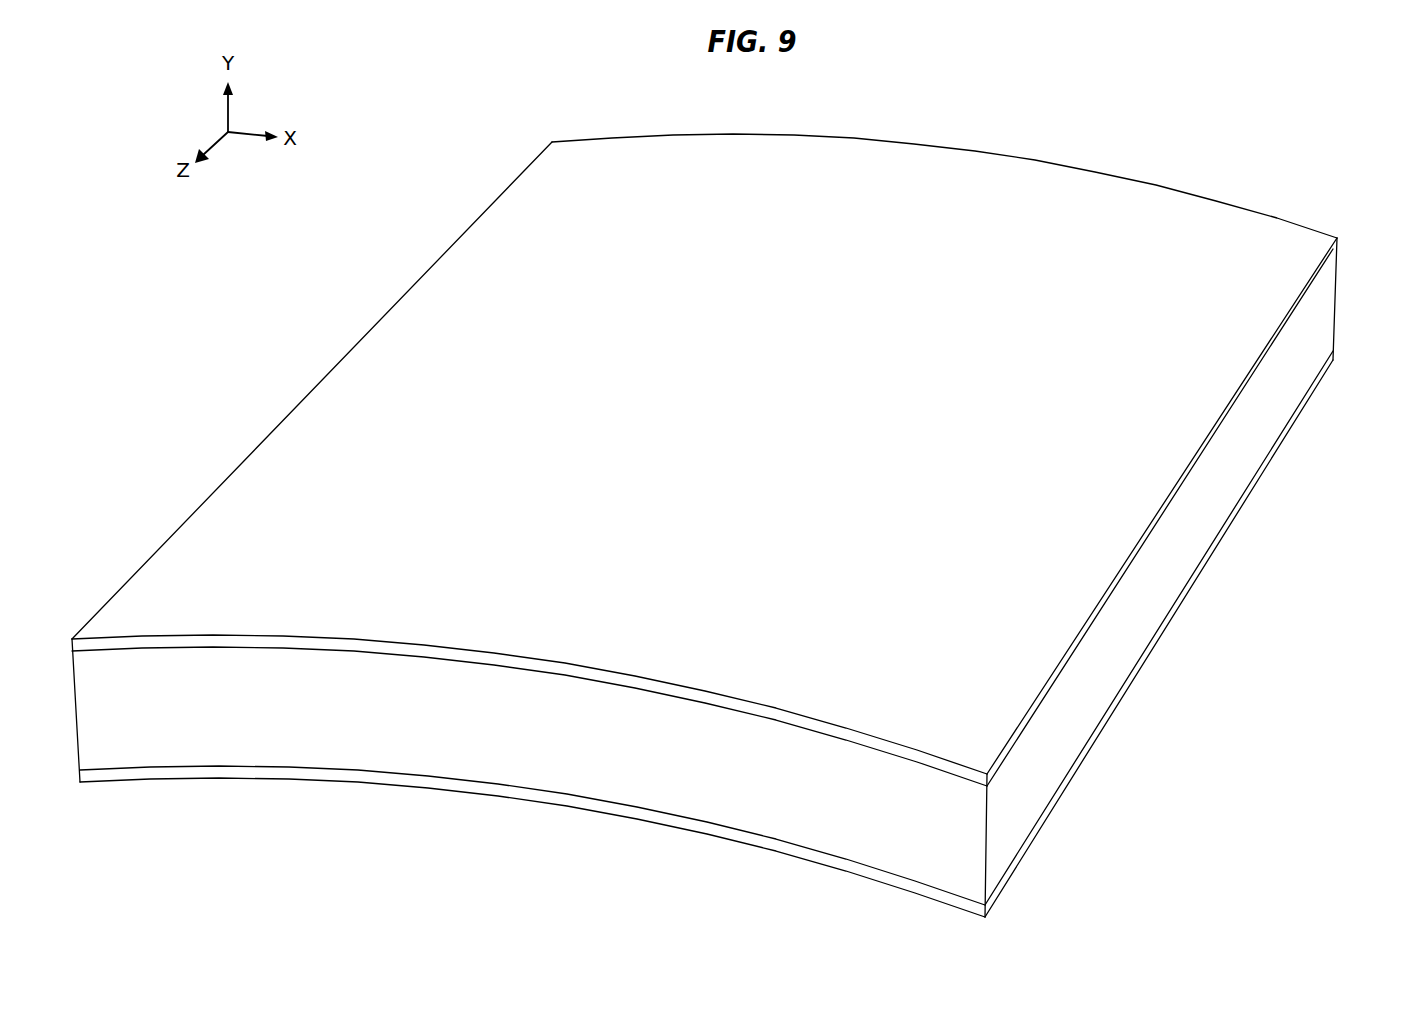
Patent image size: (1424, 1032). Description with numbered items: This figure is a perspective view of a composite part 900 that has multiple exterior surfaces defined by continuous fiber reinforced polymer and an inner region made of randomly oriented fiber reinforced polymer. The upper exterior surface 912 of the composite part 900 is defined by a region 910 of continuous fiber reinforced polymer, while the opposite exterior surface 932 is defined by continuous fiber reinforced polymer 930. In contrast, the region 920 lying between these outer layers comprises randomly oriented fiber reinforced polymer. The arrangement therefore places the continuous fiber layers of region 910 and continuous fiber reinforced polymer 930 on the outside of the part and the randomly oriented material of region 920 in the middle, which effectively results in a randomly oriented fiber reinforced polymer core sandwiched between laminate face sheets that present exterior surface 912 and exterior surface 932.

The composite part 900 is at (744, 513).
The region of continuous fiber reinforced polymer 910 is at (1052, 163).
The exterior surface 912 is at (741, 402).
The region of randomly oriented fiber reinforced polymer 920 is at (1323, 312).
The continuous fiber reinforced polymer 930 is at (455, 793).
The exterior surface 932 is at (573, 825).